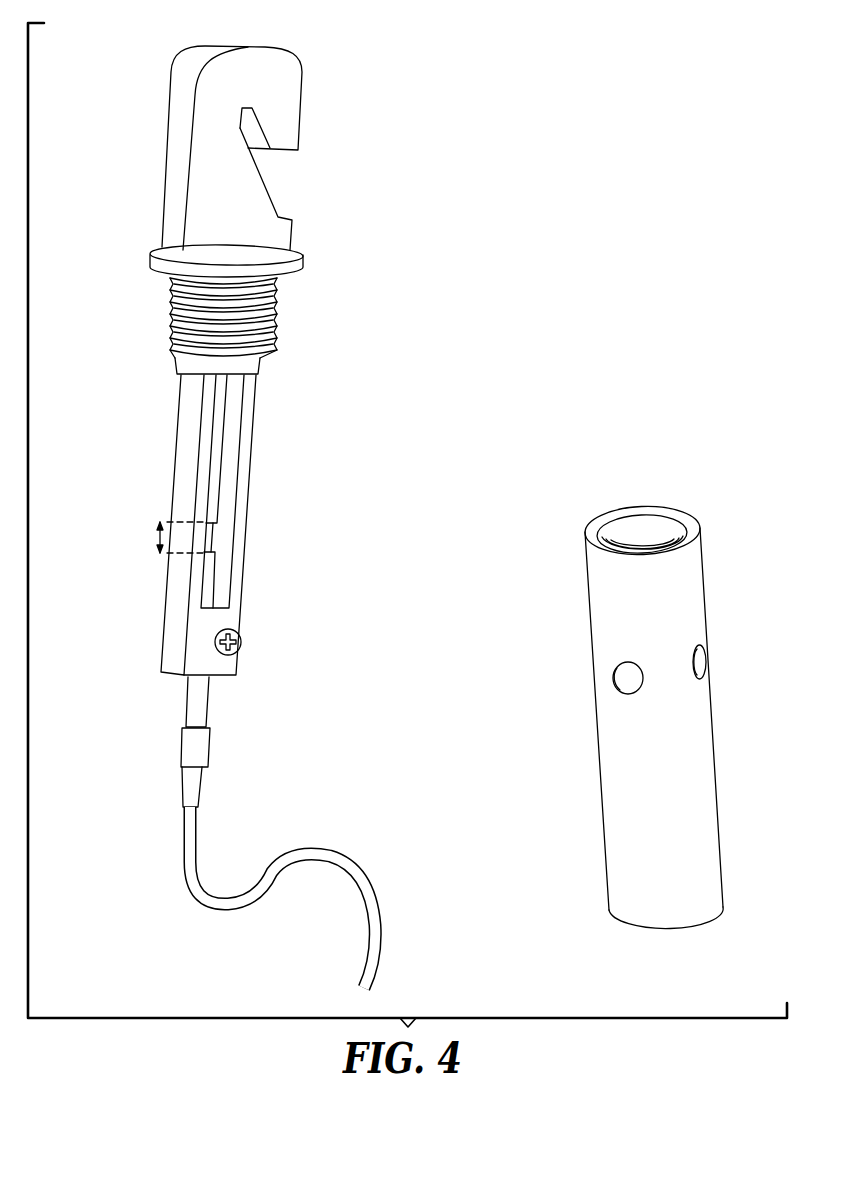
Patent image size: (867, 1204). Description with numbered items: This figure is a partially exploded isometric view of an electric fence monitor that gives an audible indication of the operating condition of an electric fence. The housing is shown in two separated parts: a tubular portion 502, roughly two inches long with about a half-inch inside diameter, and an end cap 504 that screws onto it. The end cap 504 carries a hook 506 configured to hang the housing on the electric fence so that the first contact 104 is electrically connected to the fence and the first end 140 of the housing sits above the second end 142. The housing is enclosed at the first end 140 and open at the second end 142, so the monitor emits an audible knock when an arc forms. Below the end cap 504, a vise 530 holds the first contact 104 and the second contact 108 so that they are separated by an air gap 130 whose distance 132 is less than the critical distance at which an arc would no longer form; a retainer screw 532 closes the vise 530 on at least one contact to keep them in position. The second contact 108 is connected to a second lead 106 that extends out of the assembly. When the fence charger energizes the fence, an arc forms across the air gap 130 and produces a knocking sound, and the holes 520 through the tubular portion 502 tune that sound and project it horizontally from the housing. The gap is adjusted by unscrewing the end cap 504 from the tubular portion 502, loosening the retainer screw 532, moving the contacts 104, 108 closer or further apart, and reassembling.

The first contact 104 is at (215, 467).
The second lead 106 is at (337, 858).
The second contact 108 is at (207, 583).
The air gap 130 is at (219, 537).
The distance 132 is at (155, 533).
The first end 140 is at (633, 507).
The second end 142 is at (667, 930).
The tubular portion 502 is at (628, 677).
The end cap 504 is at (291, 181).
The hook 506 is at (255, 128).
The holes 520 is at (705, 662).
The vise 530 is at (242, 490).
The retainer screw 532 is at (240, 645).